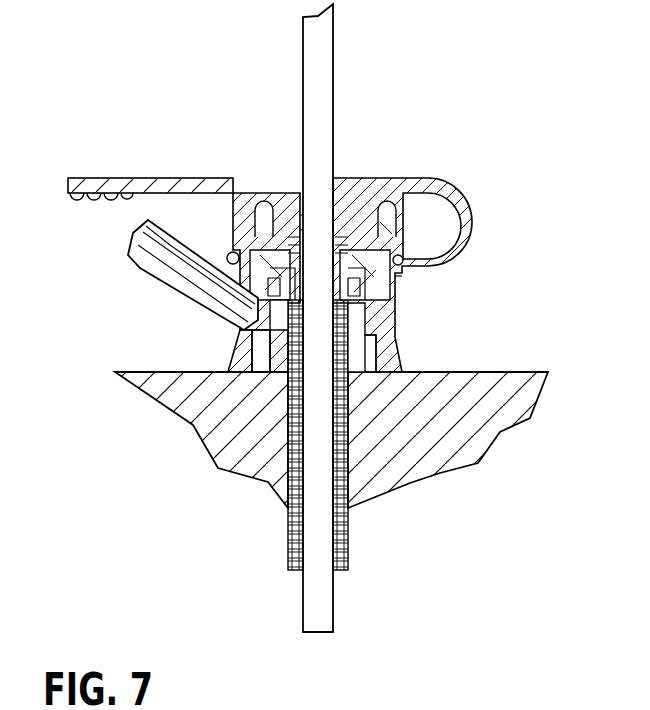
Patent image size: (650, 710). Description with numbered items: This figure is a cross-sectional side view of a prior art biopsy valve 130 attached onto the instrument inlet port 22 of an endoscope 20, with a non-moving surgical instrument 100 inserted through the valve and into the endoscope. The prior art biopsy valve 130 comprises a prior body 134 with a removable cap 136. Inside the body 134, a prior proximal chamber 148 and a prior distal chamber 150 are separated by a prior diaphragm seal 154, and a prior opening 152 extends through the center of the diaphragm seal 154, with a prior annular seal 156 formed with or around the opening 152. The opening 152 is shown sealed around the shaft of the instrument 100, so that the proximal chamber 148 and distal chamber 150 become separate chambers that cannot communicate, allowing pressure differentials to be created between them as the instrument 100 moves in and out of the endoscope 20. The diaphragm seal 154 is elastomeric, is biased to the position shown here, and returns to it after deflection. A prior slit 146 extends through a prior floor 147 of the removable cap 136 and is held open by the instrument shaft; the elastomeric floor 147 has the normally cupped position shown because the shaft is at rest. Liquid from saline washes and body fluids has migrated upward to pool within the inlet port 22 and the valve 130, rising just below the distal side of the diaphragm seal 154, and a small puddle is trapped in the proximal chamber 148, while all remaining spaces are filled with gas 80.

The endoscope 20 is at (192, 426).
The instrument inlet port 22 is at (246, 319).
The gas 80 is at (363, 197).
The surgical instrument 100 is at (300, 63).
The prior art biopsy valve 130 is at (434, 120).
The prior body 134 is at (237, 358).
The removable cap 136 is at (187, 178).
The prior slit 146 is at (303, 223).
The prior floor 147 is at (350, 232).
The prior proximal chamber 148 is at (262, 226).
The prior distal chamber 150 is at (268, 284).
The prior opening 152 is at (373, 336).
The prior diaphragm seal 154 is at (395, 279).
The prior annular seal 156 is at (350, 283).